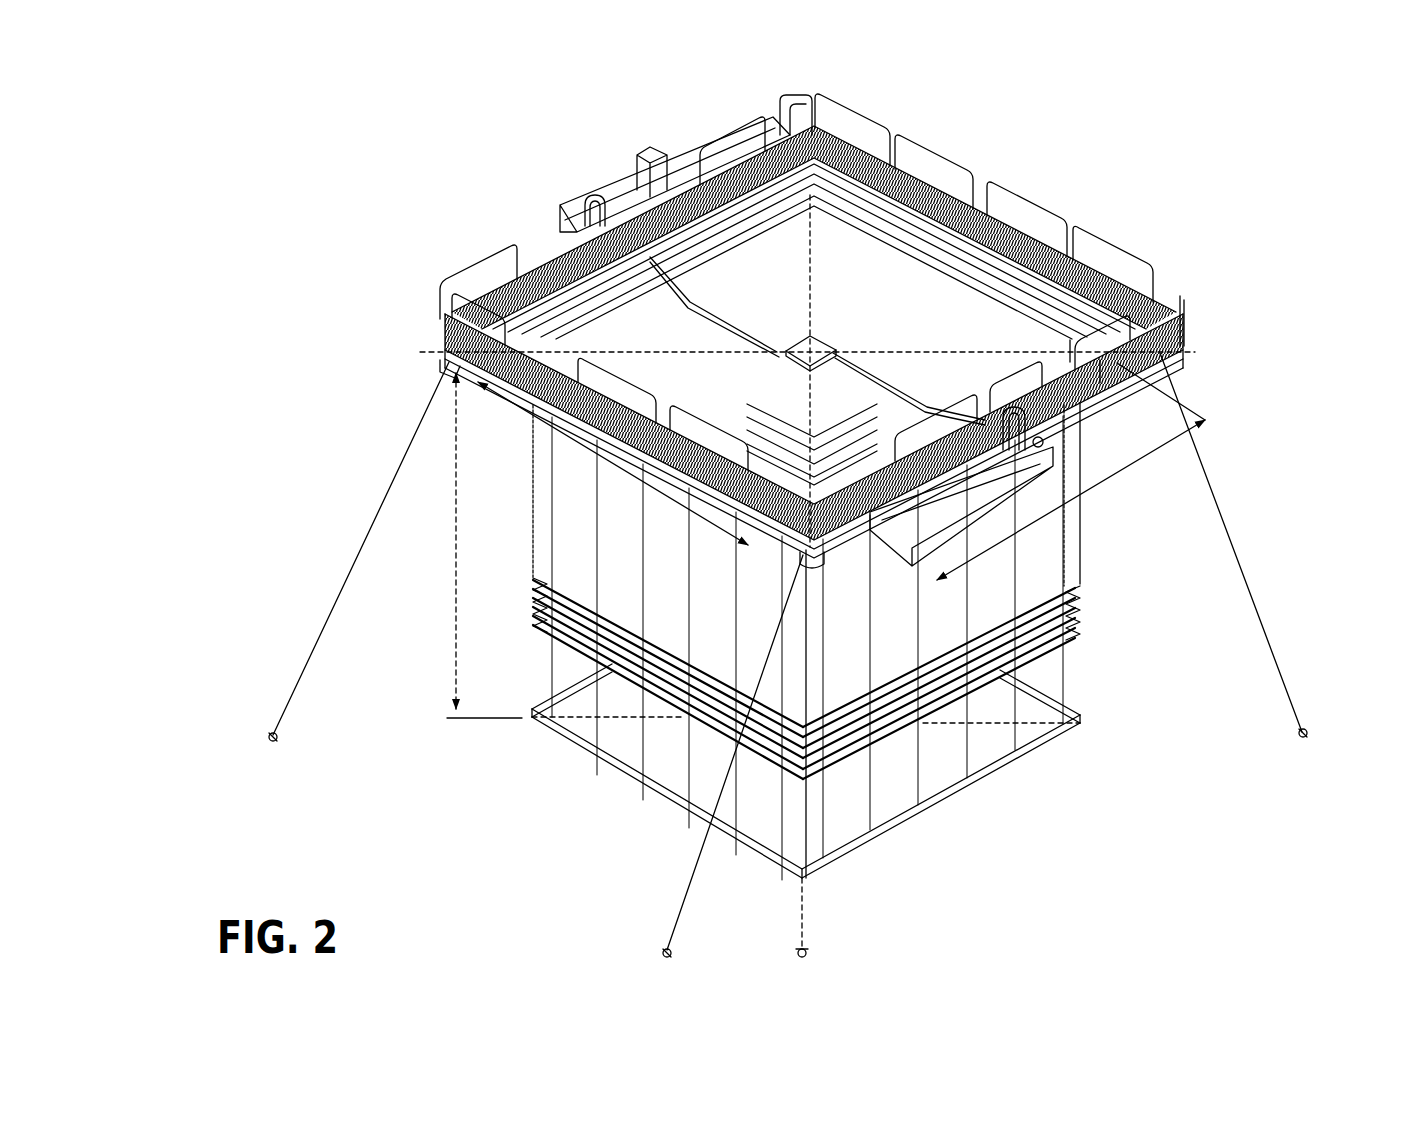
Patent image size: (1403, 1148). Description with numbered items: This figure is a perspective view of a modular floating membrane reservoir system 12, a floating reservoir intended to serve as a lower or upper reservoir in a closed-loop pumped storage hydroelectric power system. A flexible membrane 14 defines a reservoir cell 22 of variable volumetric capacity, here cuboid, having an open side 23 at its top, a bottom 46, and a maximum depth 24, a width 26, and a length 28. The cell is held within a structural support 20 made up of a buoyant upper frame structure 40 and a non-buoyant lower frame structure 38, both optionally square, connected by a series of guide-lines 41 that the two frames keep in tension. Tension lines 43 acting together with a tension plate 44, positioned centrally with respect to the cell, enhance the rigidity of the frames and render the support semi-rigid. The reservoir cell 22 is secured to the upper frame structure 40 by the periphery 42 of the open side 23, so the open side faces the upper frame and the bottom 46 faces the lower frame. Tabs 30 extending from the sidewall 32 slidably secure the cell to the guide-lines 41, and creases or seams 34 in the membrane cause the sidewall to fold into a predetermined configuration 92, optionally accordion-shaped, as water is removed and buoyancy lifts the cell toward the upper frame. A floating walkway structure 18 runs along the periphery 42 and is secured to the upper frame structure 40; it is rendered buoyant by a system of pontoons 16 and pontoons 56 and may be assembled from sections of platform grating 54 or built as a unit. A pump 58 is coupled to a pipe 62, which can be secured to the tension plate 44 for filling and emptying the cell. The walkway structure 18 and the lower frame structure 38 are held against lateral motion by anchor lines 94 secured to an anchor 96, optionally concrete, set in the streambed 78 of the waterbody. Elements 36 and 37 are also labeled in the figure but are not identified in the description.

The modular floating membrane reservoir system 12 is at (1112, 206).
The flexible membrane 14 is at (1071, 522).
The system of pontoons 16 is at (1198, 348).
The floating walkway structure 18 is at (852, 106).
The structural support 20 is at (505, 792).
The reservoir cell 22 is at (770, 247).
The open side 23 is at (594, 313).
The maximum depth 24 is at (457, 504).
The width 26 is at (512, 405).
The length 28 is at (1118, 462).
The tabs 30 is at (1062, 569).
The sidewall 32 is at (1062, 648).
The creases or seams 34 is at (1062, 614).
The corner post 36 is at (1081, 505).
The curtain cord 37 is at (977, 690).
The lower frame structure 38 is at (660, 800).
The upper frame structure 40 is at (965, 250).
The guide-lines 41 is at (967, 743).
The periphery 42 is at (812, 212).
The tension lines 43 is at (982, 350).
The tension plate 44 is at (815, 350).
The bottom 46 is at (807, 787).
The platform grating 54 is at (1088, 345).
The pontoons 56 is at (438, 354).
The pump 58 is at (588, 194).
The pipe 62 is at (850, 375).
The streambed 78 is at (345, 801).
The predetermined configuration 92 is at (525, 600).
The anchor lines 94 is at (358, 551).
The anchor 96 is at (269, 736).